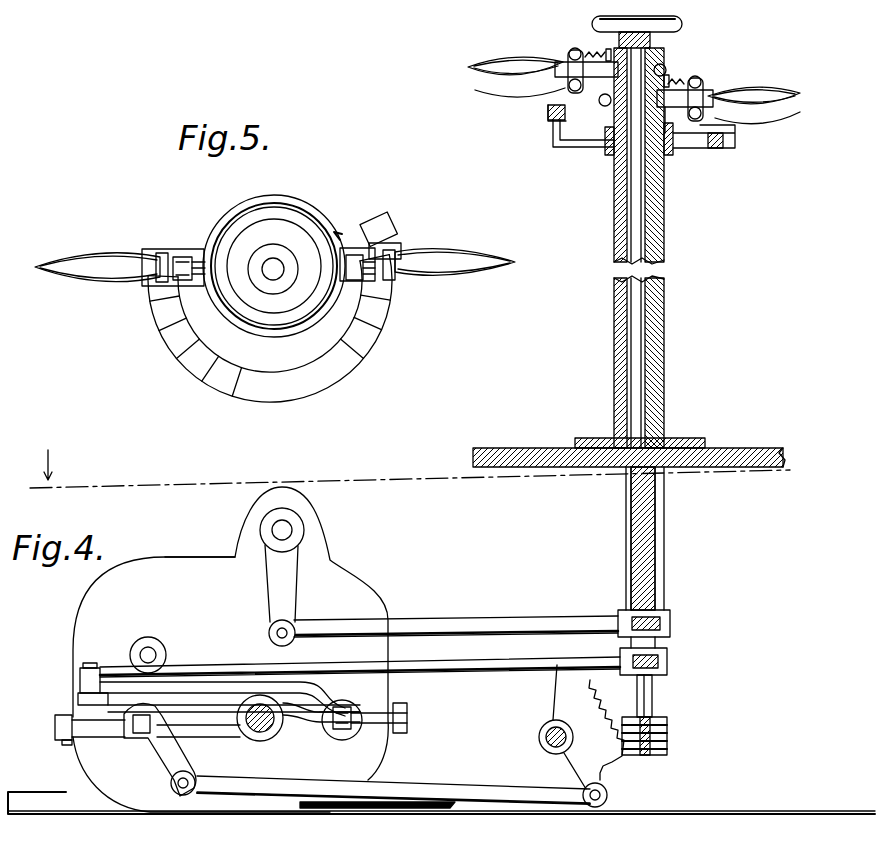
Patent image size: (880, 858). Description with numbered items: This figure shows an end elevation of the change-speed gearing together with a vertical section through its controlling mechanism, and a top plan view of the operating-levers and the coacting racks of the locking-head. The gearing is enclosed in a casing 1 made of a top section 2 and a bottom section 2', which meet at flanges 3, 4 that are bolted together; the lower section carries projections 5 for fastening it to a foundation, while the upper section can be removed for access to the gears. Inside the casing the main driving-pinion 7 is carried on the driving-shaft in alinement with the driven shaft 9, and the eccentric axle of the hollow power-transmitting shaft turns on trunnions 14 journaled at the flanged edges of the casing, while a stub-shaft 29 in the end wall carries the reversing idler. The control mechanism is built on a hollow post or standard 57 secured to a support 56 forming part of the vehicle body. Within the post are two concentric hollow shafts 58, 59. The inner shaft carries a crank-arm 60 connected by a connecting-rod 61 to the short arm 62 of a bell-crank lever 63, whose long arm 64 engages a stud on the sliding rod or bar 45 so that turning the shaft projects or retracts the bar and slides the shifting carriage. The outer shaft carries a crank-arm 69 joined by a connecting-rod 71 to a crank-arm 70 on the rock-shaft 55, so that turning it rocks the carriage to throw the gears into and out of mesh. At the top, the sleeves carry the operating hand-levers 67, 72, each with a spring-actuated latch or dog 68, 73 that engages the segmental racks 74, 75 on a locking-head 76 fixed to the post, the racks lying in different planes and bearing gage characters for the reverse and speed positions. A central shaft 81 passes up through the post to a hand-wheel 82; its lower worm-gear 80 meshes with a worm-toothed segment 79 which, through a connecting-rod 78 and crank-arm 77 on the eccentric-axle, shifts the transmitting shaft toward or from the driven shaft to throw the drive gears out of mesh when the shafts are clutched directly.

In FIG. 4, the casing 1 is at (200, 542).
In FIG. 4, the top casing-section 2 is at (218, 633).
In FIG. 4, the bottom casing-section 2' is at (201, 789).
In FIG. 4, the flange 3 is at (56, 726).
In FIG. 4, the flange 4 is at (409, 731).
In FIG. 4, the projections 5 is at (48, 805).
In FIG. 4, the main driving-pinion 7 is at (408, 473).
In FIG. 4, the driven shaft 9 is at (246, 730).
In FIG. 4, the trunnions 14 is at (135, 733).
In FIG. 4, the stub-shaft 29 is at (150, 645).
In FIG. 4, the sliding rod or bar 45 is at (324, 740).
In FIG. 4, the rock-shaft 55 is at (284, 530).
In FIG. 4, the support 56 is at (735, 448).
In FIG. 4, the hollow post or standard 57 is at (612, 294).
In FIG. 4, the inner hollow shaft 58 is at (660, 246).
In FIG. 4, the outer hollow shaft 59 is at (612, 222).
In FIG. 4, the crank-arm 60 is at (667, 660).
In FIG. 4, the connecting-rod 61 is at (448, 672).
In FIG. 4, the short arm 62 is at (80, 675).
In FIG. 4, the bell-crank lever 63 is at (78, 698).
In FIG. 4, the long arm 64 is at (203, 688).
In FIG. 5, the operating hand-lever 67 is at (100, 257).
In FIG. 4, the operating hand-lever 67 is at (520, 62).
In FIG. 4, the spring-actuated latch or dog 68 is at (546, 108).
In FIG. 4, the crank-arm 69 is at (672, 611).
In FIG. 4, the crank-arm 70 is at (270, 563).
In FIG. 4, the connecting-rod 71 is at (445, 619).
In FIG. 5, the operating hand-lever 72 is at (440, 250).
In FIG. 4, the operating hand-lever 72 is at (750, 90).
In FIG. 4, the spring-actuated latch or dog 73 is at (732, 134).
In FIG. 5, the segmental rack 74 is at (155, 287).
In FIG. 4, the segmental rack 74 is at (551, 128).
In FIG. 5, the segmental rack 75 is at (398, 306).
In FIG. 4, the segmental rack 75 is at (718, 150).
In FIG. 4, the locking-head 76 is at (600, 148).
In FIG. 4, the crank-arm 77 is at (157, 752).
In FIG. 4, the connecting-rod 78 is at (463, 781).
In FIG. 4, the worm-toothed segment 79 is at (563, 702).
In FIG. 4, the worm-gear 80 is at (668, 736).
In FIG. 5, the shaft 81 is at (273, 269).
In FIG. 4, the shaft 81 is at (652, 696).
In FIG. 5, the hand-wheel 82 is at (312, 210).
In FIG. 4, the hand-wheel 82 is at (683, 22).